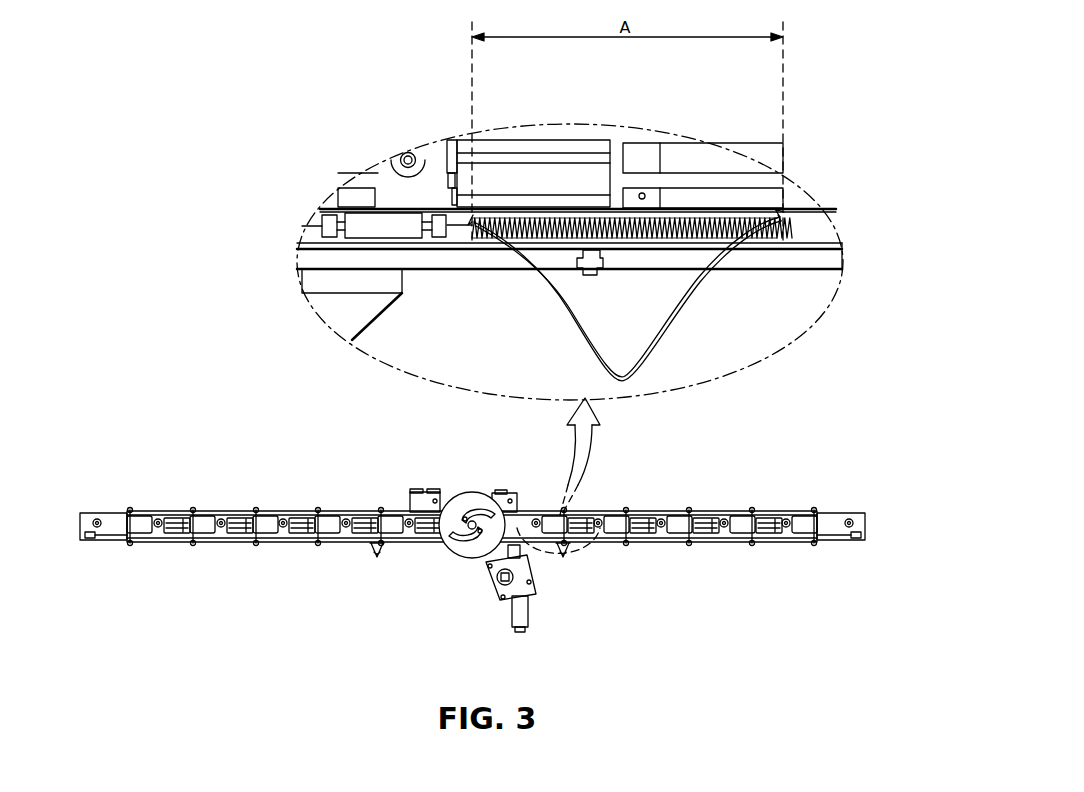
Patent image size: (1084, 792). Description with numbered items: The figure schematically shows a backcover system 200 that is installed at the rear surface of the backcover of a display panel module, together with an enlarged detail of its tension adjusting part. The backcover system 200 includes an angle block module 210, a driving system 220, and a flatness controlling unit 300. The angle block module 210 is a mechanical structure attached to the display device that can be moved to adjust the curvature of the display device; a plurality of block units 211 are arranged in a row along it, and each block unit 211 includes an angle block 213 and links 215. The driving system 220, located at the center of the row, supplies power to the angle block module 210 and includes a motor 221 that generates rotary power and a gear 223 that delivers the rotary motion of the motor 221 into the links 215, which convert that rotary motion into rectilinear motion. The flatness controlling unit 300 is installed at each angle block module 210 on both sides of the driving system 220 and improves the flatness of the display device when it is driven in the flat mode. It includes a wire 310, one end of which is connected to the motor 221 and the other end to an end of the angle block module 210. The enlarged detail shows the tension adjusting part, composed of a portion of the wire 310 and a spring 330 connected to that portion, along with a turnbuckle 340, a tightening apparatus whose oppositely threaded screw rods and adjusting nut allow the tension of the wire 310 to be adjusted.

The backcover system 200 is at (488, 500).
The angle block module 210 is at (472, 529).
The block unit 211 is at (735, 480).
The angle block 213 is at (706, 521).
The links 215 is at (770, 540).
The driving system 220 is at (485, 547).
The motor 221 is at (532, 581).
The gear 223 is at (460, 500).
The flatness controlling unit 300 is at (586, 239).
The wire 310 is at (697, 292).
The spring 330 is at (707, 220).
The turnbuckle 340 is at (395, 225).